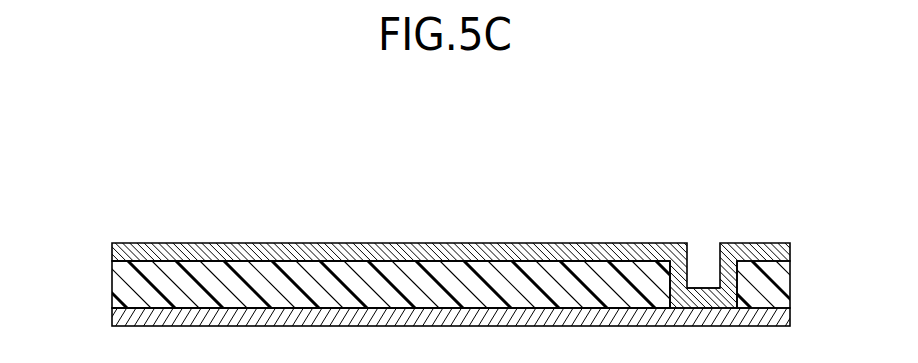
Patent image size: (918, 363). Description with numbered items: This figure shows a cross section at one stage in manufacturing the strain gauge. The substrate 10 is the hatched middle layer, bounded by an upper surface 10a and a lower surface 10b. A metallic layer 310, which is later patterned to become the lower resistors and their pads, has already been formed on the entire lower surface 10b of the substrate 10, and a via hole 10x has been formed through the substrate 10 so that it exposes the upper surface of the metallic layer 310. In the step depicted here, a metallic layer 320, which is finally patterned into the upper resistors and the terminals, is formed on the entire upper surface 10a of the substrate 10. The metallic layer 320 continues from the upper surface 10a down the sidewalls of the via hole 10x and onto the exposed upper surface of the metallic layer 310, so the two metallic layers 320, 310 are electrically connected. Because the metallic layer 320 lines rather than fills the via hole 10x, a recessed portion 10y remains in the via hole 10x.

The substrate 10 is at (120, 282).
The upper surface 10a is at (122, 252).
The lower surface 10b is at (126, 315).
The via hole 10x is at (677, 274).
The recessed portion 10y is at (711, 261).
The metallic layer 310 is at (792, 313).
The metallic layer 320 is at (792, 250).